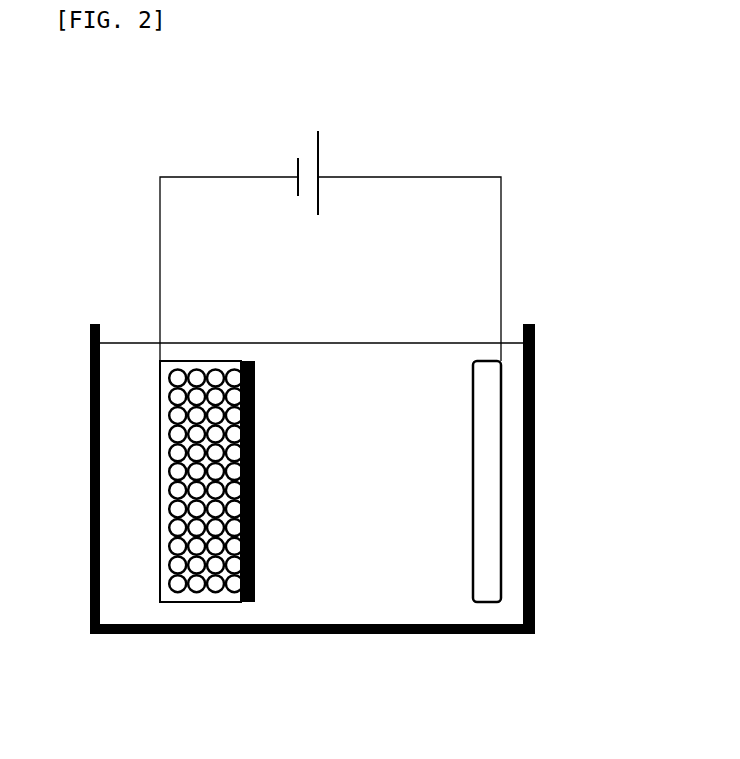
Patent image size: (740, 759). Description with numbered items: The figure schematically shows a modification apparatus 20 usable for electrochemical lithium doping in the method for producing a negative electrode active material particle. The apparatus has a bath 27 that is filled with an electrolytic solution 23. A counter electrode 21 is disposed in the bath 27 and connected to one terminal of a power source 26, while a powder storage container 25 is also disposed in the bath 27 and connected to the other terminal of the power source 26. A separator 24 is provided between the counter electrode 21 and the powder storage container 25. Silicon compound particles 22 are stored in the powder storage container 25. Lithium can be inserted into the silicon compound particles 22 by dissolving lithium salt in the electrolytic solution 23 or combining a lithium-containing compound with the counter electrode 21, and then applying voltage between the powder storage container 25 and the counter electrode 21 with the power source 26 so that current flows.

The modification apparatus 20 is at (116, 112).
The counter electrode 21 is at (483, 423).
The silicon compound particle 22 is at (200, 550).
The electrolytic solution 23 is at (360, 372).
The separator 24 is at (268, 393).
The powder storage container 25 is at (195, 364).
The power source 26 is at (337, 112).
The bath 27 is at (447, 644).